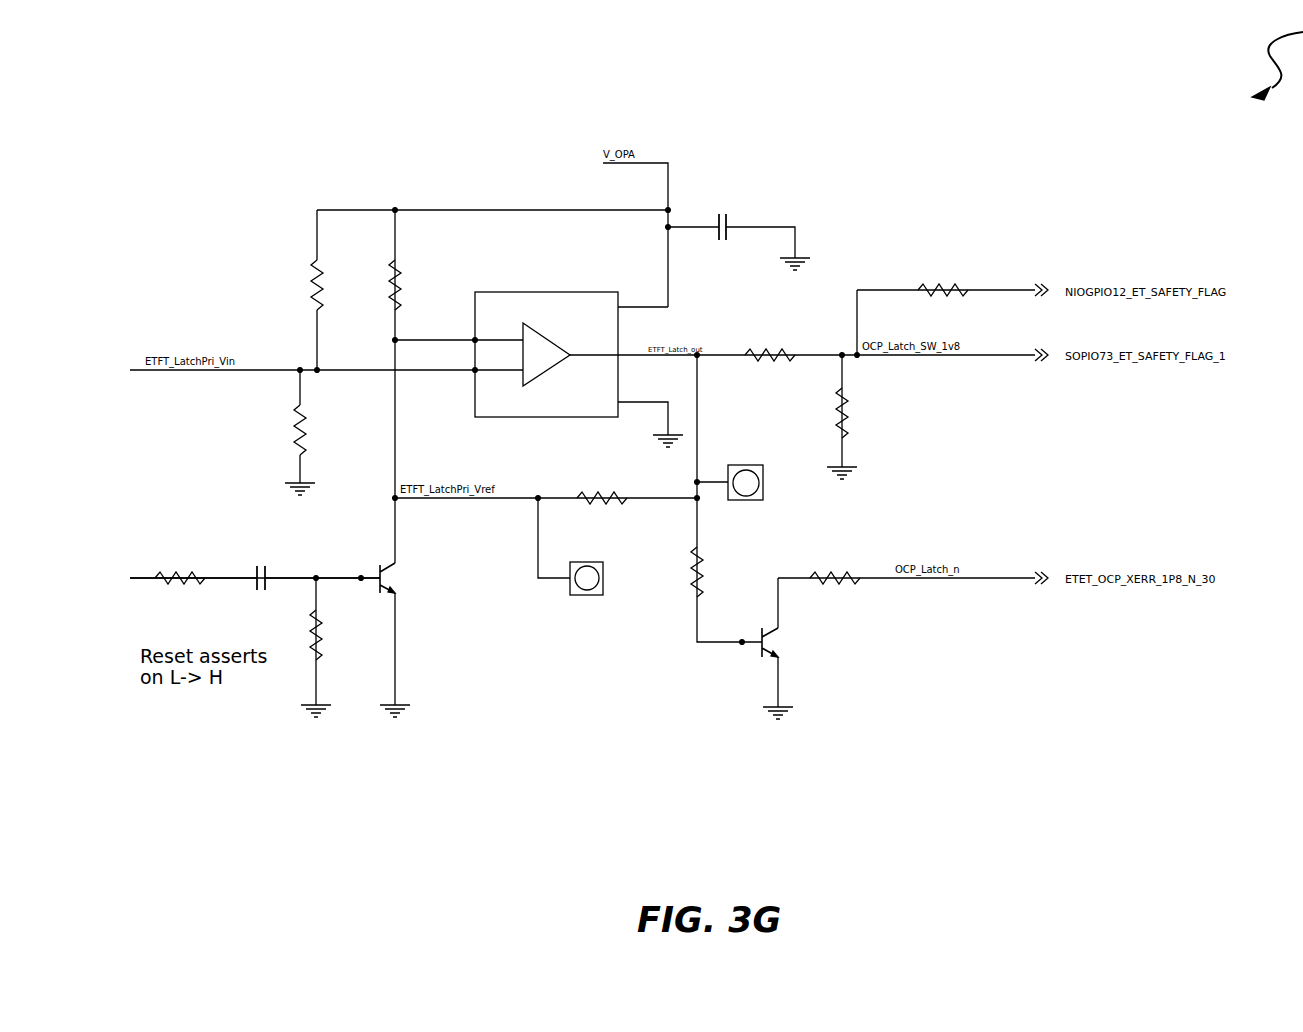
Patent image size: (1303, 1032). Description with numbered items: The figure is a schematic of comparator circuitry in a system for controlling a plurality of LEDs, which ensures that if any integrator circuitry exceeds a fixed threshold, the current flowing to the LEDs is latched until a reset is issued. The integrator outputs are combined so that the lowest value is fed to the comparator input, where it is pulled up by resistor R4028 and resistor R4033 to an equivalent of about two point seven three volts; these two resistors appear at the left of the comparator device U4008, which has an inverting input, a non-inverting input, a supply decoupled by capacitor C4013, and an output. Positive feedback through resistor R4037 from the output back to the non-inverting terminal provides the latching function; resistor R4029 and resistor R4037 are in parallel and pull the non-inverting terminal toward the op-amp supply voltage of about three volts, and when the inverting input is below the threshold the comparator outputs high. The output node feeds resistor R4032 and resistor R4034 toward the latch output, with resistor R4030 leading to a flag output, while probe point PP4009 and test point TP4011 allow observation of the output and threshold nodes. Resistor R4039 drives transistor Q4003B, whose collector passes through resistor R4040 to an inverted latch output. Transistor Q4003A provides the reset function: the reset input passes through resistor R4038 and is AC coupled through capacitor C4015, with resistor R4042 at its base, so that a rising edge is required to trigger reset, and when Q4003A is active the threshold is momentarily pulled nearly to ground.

The resistor R4028 is at (336, 290).
The resistor R4029 is at (415, 284).
The resistor R4033 is at (322, 426).
The comparator TLV7031DPWR U4008 is at (548, 356).
The capacitor 0.1uF 16V C4013 is at (717, 229).
The resistor 10K 1% R4032 is at (765, 354).
The resistor 0 ohm R4030 is at (943, 288).
The resistor 10K 1% R4034 is at (863, 413).
The probe point DNI PP4009 is at (765, 482).
The resistor R4037 is at (591, 497).
The test point DNI TP4011 is at (604, 578).
The resistor 100K 1% R4039 is at (720, 571).
The resistor 0 ohm R4040 is at (835, 579).
The transistor BC847BV Q4003B is at (785, 643).
The resistor 10K 1% R4038 is at (173, 580).
The capacitor C4015 is at (252, 584).
The resistor 10K 1% R4042 is at (337, 635).
The transistor Q4003A is at (400, 579).